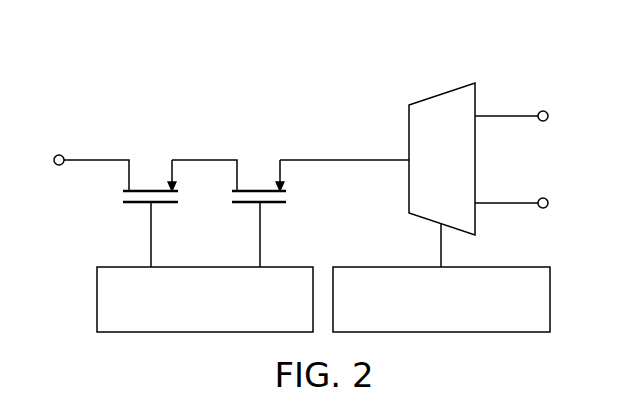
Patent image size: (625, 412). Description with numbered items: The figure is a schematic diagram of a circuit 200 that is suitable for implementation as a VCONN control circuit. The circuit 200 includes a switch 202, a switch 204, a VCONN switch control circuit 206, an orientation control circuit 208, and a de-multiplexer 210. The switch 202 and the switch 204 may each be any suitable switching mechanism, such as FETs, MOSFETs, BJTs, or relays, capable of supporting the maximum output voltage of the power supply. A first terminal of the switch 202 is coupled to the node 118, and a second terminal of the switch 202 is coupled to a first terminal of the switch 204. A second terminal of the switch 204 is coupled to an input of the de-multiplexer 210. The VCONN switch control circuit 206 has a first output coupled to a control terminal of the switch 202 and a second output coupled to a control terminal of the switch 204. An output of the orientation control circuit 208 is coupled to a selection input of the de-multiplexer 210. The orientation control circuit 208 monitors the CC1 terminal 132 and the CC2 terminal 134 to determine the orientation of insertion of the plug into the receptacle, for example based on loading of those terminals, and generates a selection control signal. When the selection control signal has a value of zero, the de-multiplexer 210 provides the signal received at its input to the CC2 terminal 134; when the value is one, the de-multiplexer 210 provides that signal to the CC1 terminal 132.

The circuit 200 is at (172, 72).
The node 118 is at (56, 155).
The switch 202 is at (138, 205).
The switch 204 is at (273, 205).
The VCONN switch control circuit 206 is at (206, 333).
The orientation control circuit 208 is at (453, 334).
The de-multiplexer 210 is at (421, 173).
The CC1 terminal 132 is at (546, 197).
The CC2 terminal 134 is at (546, 110).